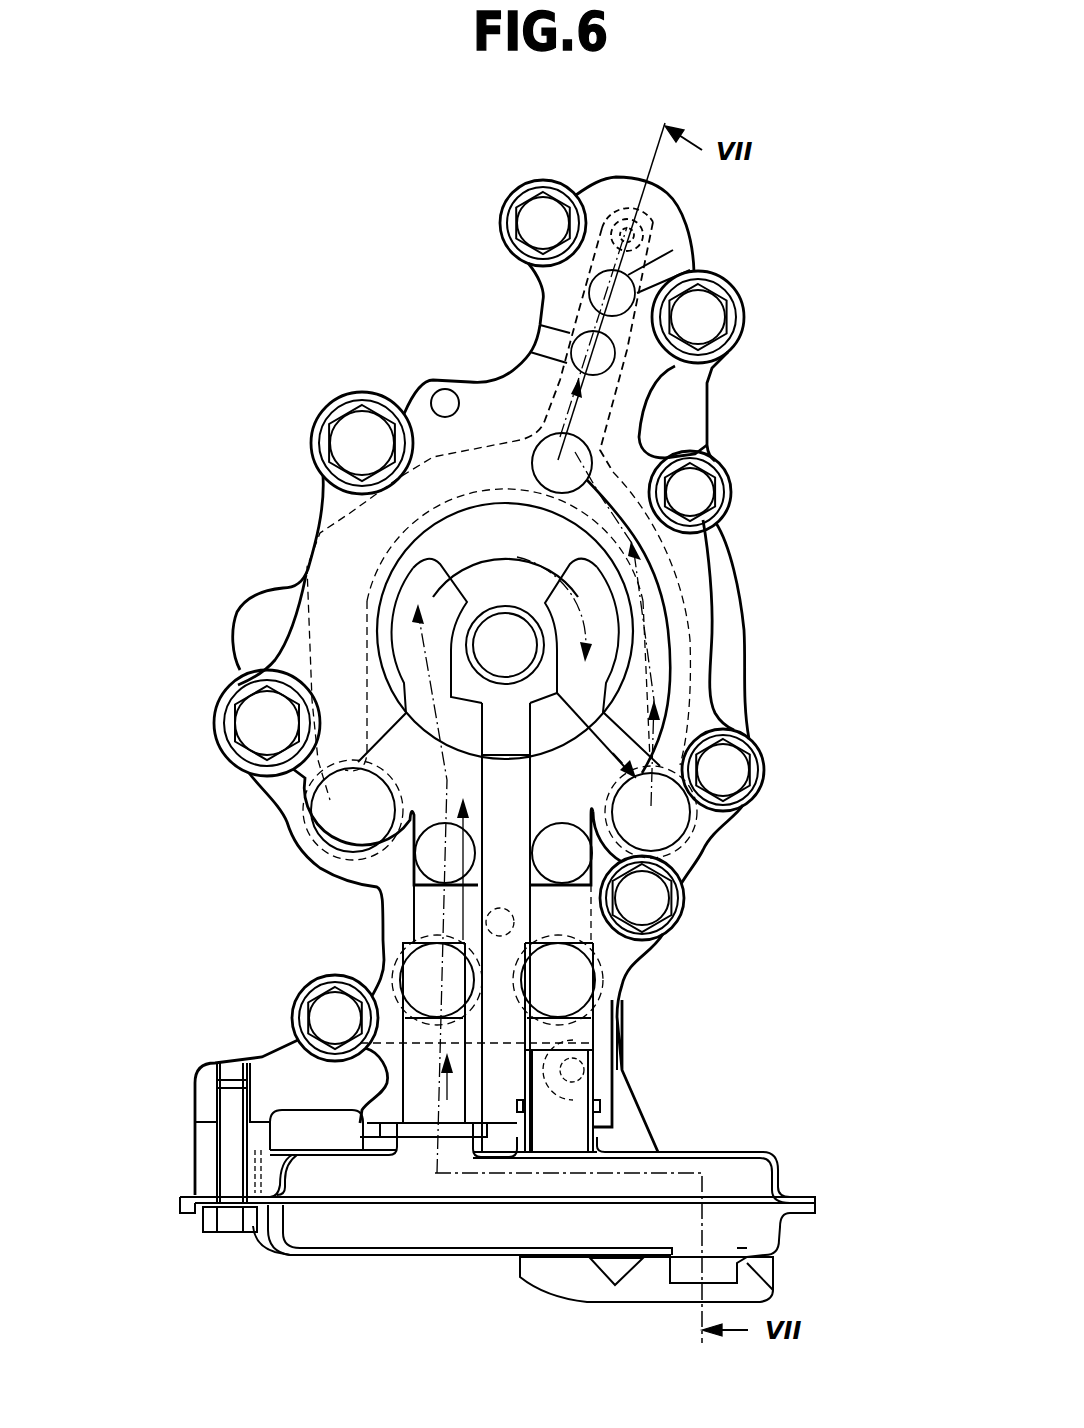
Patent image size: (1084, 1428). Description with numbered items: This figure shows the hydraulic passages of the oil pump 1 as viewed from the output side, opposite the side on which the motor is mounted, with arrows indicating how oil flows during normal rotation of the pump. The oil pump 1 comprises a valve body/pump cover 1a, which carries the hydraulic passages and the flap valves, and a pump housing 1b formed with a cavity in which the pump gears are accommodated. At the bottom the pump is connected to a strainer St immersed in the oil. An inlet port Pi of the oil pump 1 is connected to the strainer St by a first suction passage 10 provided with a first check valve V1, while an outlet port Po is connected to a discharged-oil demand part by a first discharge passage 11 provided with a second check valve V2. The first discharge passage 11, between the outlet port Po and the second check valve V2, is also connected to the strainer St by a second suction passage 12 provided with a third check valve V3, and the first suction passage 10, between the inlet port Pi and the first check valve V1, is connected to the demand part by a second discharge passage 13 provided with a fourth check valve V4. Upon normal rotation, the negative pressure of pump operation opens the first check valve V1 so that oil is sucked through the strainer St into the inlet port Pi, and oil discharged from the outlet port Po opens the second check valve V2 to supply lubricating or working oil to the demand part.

The oil pump 1 is at (478, 374).
The valve body/pump cover 1a is at (693, 423).
The pump housing 1b is at (673, 240).
The first suction passage 10 is at (410, 900).
The first discharge passage 11 is at (689, 623).
The second suction passage 12 is at (604, 932).
The second discharge passage 13 is at (332, 559).
The inlet port Pi is at (402, 628).
The outlet port Po is at (607, 642).
The first check valve V1 is at (395, 969).
The second check valve V2 is at (703, 825).
The third check valve V3 is at (600, 995).
The fourth check valve V4 is at (322, 820).
The strainer St is at (778, 1165).